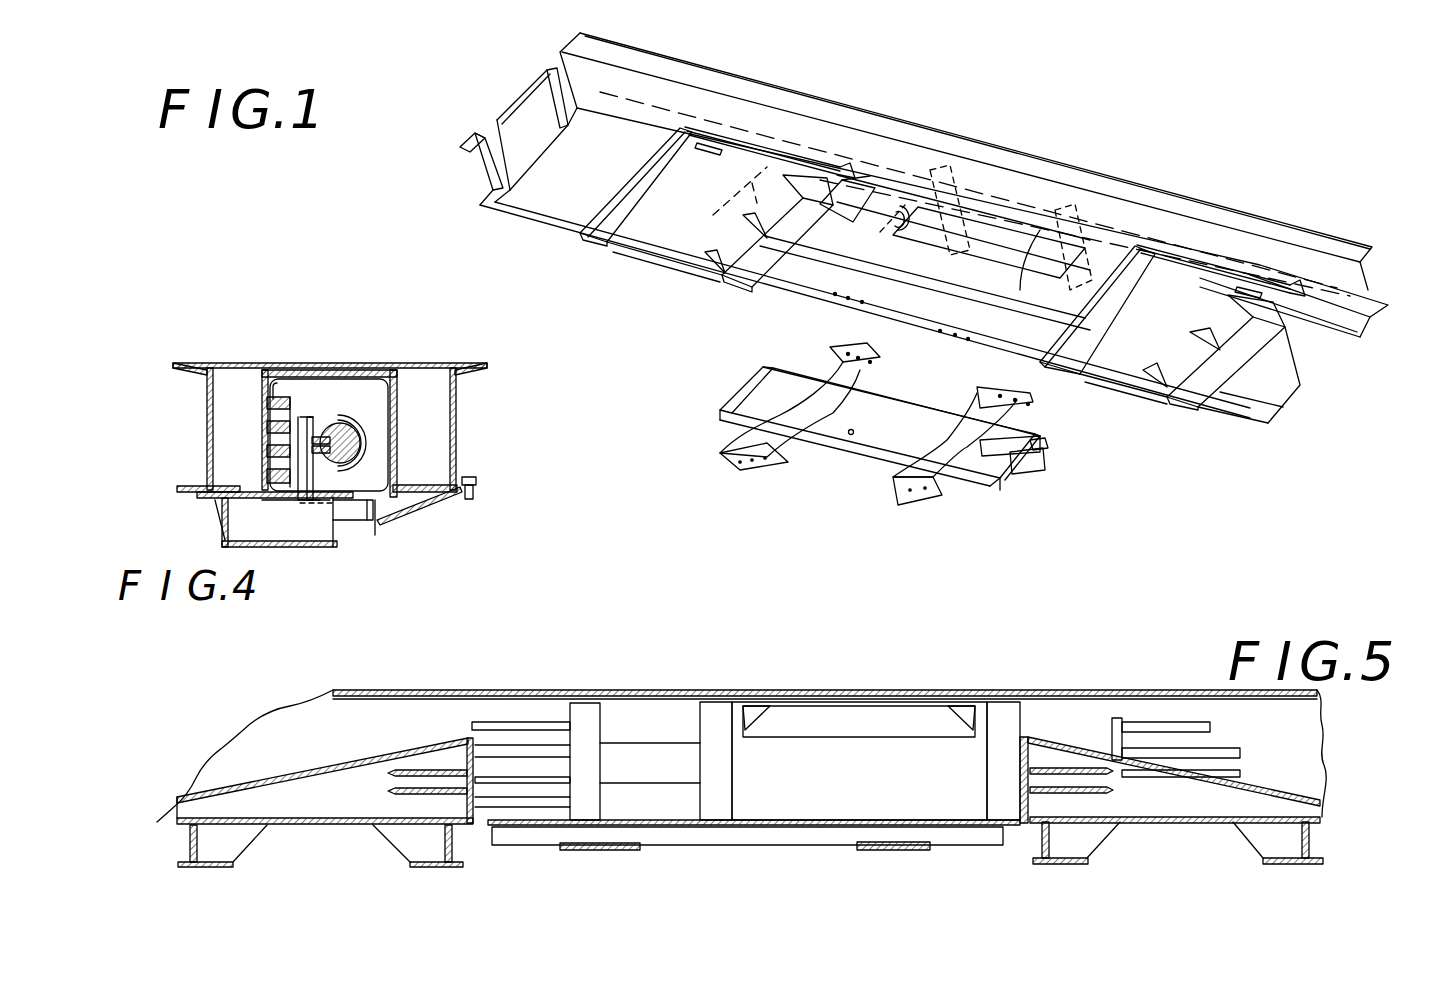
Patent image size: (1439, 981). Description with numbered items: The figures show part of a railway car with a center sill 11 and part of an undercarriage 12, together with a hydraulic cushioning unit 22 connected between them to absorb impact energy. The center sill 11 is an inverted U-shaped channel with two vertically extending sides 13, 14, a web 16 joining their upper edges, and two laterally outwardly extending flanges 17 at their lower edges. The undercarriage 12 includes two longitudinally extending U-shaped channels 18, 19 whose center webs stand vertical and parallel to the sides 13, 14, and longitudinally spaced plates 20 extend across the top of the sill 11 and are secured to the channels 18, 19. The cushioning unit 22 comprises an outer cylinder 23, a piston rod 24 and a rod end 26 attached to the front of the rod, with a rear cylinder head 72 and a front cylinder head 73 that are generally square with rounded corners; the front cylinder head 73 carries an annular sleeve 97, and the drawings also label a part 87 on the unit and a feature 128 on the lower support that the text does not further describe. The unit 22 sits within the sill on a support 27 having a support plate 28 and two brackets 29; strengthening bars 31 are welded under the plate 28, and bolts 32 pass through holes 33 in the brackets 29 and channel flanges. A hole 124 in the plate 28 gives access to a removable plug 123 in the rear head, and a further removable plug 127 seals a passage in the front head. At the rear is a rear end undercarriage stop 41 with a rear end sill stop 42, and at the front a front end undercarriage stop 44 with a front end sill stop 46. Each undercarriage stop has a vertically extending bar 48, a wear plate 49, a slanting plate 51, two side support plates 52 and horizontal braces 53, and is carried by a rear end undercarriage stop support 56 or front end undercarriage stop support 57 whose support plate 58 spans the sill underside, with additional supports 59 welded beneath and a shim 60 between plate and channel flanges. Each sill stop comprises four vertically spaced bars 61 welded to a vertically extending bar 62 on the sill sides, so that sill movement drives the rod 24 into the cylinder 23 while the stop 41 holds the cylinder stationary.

In FIG. 1, the center sill 11 is at (479, 79).
In FIG. 4, the center sill 11 is at (411, 370).
In FIG. 1, the undercarriage 12 is at (832, 89).
In FIG. 4, the undercarriage 12 is at (170, 352).
In FIG. 1, the vertically extending side 13 is at (503, 148).
In FIG. 1, the vertically extending side 14 is at (546, 85).
In FIG. 1, the web 16 is at (500, 102).
In FIG. 1, the laterally outwardly extending flange 17 is at (595, 145).
In FIG. 4, the laterally outwardly extending flange 17 is at (230, 490).
In FIG. 1, the U-shaped channel 18 is at (673, 64).
In FIG. 4, the U-shaped channel 18 is at (458, 407).
In FIG. 1, the U-shaped channel 19 is at (488, 222).
In FIG. 4, the U-shaped channel 19 is at (207, 422).
In FIG. 4, the plate 20 is at (251, 360).
In FIG. 1, the hydraulic cushioning unit 22 is at (850, 275).
In FIG. 5, the hydraulic cushioning unit 22 is at (802, 839).
In FIG. 1, the outer cylinder 23 is at (978, 268).
In FIG. 5, the outer cylinder 23 is at (858, 784).
In FIG. 1, the piston rod 24 is at (848, 214).
In FIG. 4, the piston rod 24 is at (344, 446).
In FIG. 5, the piston rod 24 is at (642, 756).
In FIG. 1, the rod end 26 is at (727, 196).
In FIG. 5, the rod end 26 is at (584, 704).
In FIG. 1, the support 27 is at (847, 436).
In FIG. 4, the support 27 is at (413, 517).
In FIG. 1, the support plate 28 is at (745, 382).
In FIG. 4, the support plate 28 is at (356, 505).
In FIG. 5, the support plate 28 is at (685, 846).
In FIG. 1, the bracket 29 is at (879, 471).
In FIG. 4, the bracket 29 is at (442, 501).
In FIG. 5, the bracket 29 is at (598, 851).
In FIG. 1, the strengthening bar 31 is at (1028, 458).
In FIG. 4, the strengthening bar 31 is at (376, 532).
In FIG. 5, the strengthening bar 31 is at (512, 850).
In FIG. 4, the bolt 32 is at (482, 469).
In FIG. 1, the hole 33 is at (838, 296).
In FIG. 5, the rear end undercarriage stop 41 is at (1330, 792).
In FIG. 5, the rear end sill stop 42 is at (1225, 730).
In FIG. 5, the front end undercarriage stop 44 is at (179, 785).
In FIG. 5, the front end sill stop 46 is at (500, 702).
In FIG. 4, the vertically extending bar 48 is at (304, 517).
In FIG. 5, the vertically extending bar 48 is at (466, 732).
In FIG. 5, the wear plate 49 is at (470, 774).
In FIG. 4, the plate 51 is at (318, 424).
In FIG. 5, the plate 51 is at (292, 778).
In FIG. 4, the side support plate 52 is at (302, 503).
In FIG. 5, the side support plate 52 is at (284, 808).
In FIG. 5, the horizontally extending brace 53 is at (390, 792).
In FIG. 1, the rear end undercarriage stop support 56 is at (1194, 418).
In FIG. 5, the rear end undercarriage stop support 56 is at (1338, 852).
In FIG. 1, the front end undercarriage stop support 57 is at (927, 275).
In FIG. 4, the front end undercarriage stop support 57 is at (252, 538).
In FIG. 5, the front end undercarriage stop support 57 is at (695, 864).
In FIG. 1, the support plate 58 is at (740, 188).
In FIG. 4, the support plate 58 is at (194, 499).
In FIG. 5, the support plate 58 is at (343, 824).
In FIG. 1, the additional support 59 is at (646, 250).
In FIG. 4, the additional support 59 is at (212, 531).
In FIG. 5, the additional support 59 is at (210, 868).
In FIG. 4, the shim 60 is at (182, 491).
In FIG. 4, the vertically spaced bar 61 is at (262, 470).
In FIG. 5, the vertically spaced bar 61 is at (560, 766).
In FIG. 4, the vertically extending bar 62 is at (282, 385).
In FIG. 5, the vertically extending bar 62 is at (560, 704).
In FIG. 5, the rear cylinder head 72 is at (998, 702).
In FIG. 4, the front cylinder head 73 is at (388, 415).
In FIG. 5, the front cylinder head 73 is at (720, 702).
In FIG. 1, the reinforcing plate 87 is at (1017, 166).
In FIG. 5, the reinforcing plate 87 is at (862, 731).
In FIG. 4, the annular sleeve 97 is at (330, 415).
In FIG. 1, the removable plug 123 is at (1052, 300).
In FIG. 1, the hole 124 is at (1007, 483).
In FIG. 1, the removable plug 127 is at (905, 263).
In FIG. 1, the hole 128 is at (854, 432).